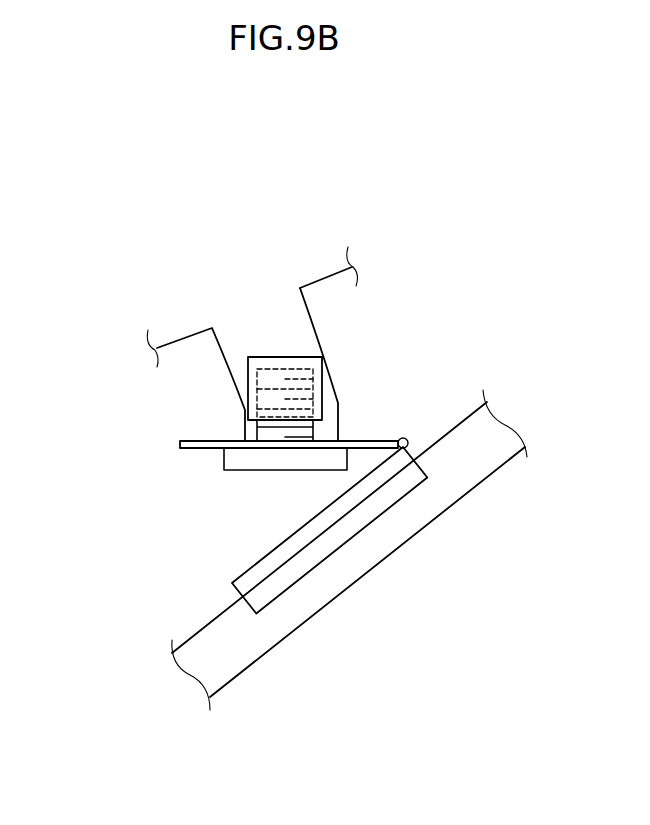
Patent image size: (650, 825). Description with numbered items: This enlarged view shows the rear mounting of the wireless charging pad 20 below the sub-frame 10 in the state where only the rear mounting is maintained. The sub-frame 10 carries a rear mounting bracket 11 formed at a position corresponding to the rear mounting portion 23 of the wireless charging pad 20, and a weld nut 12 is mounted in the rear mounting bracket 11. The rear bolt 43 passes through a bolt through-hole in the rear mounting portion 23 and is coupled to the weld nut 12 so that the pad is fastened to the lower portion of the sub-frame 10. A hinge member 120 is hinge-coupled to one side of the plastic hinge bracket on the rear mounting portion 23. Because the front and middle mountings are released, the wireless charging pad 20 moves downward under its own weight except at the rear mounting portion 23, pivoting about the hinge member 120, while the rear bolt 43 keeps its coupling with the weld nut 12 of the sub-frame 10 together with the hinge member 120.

The sub-frame 10 is at (317, 264).
The rear mounting bracket 11 is at (295, 330).
The weld nut 12 is at (322, 388).
The hinge member 120 is at (182, 438).
The rear bolt 43 is at (259, 462).
The rear mounting portion 23 is at (335, 528).
The wireless charging pad 20 is at (303, 606).